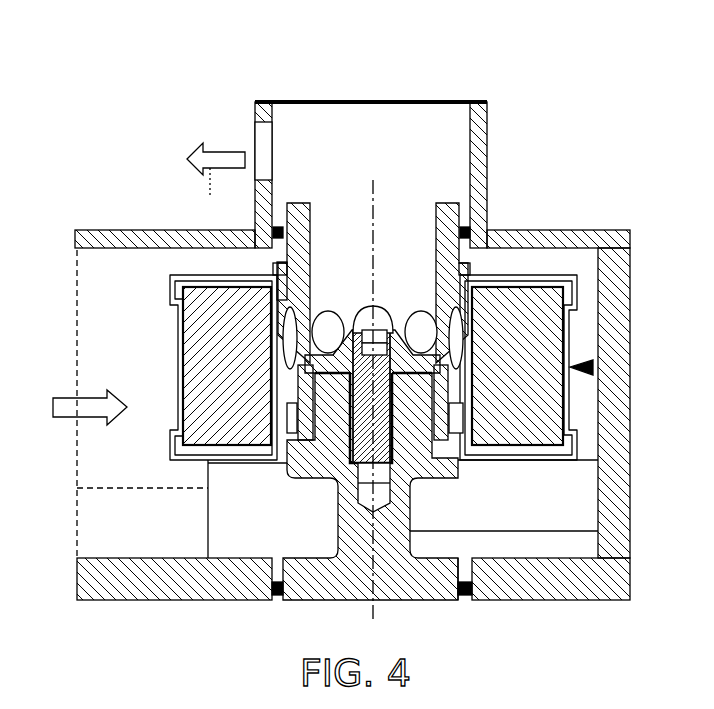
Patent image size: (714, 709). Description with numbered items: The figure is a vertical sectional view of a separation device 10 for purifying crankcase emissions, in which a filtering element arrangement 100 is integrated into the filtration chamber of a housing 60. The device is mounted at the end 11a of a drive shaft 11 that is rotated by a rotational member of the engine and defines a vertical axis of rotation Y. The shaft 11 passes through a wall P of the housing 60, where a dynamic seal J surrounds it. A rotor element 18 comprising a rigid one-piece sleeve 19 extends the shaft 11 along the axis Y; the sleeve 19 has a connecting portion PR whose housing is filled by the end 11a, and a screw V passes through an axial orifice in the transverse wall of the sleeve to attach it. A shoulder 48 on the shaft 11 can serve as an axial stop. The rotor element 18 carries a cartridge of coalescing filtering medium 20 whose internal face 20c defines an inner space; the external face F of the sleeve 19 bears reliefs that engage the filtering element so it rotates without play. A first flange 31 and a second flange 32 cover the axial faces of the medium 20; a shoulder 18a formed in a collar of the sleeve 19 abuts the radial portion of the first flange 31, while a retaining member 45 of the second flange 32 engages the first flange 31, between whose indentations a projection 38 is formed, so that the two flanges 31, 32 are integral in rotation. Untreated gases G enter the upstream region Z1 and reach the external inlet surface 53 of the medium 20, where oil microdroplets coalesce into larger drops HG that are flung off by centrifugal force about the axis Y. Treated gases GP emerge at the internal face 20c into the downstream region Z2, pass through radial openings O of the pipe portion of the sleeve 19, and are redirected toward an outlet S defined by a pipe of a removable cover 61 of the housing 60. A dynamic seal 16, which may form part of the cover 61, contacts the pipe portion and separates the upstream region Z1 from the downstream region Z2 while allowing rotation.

The separation device 10 is at (73, 517).
The shaft 11 is at (598, 531).
The end of the shaft 11a is at (415, 400).
The dynamic seal 16 is at (472, 232).
The rotor element 18 is at (310, 240).
The shoulder 18a is at (283, 295).
The sleeve 19 is at (457, 263).
The filtering medium 20 is at (565, 400).
The internal face 20c is at (280, 325).
The first flange 31 is at (577, 290).
The second flange 32 is at (577, 450).
The projection 38 is at (290, 375).
The retaining member 45 is at (292, 380).
The shoulder 48 is at (460, 460).
The external inlet surface 53 is at (265, 352).
The housing 60 is at (628, 232).
The cover 61 is at (483, 200).
The filtering element arrangement 100 is at (193, 477).
The outlet S is at (255, 123).
The radial openings O is at (417, 327).
The downstream region Z2 is at (397, 247).
The upstream region Z1 is at (167, 462).
The treated gases GP is at (216, 185).
The untreated gases G is at (55, 403).
The external face F is at (447, 378).
The drops of oil HG is at (593, 368).
The connecting portion PR is at (307, 453).
The screw V is at (337, 483).
The wall P is at (173, 600).
The dynamic seal J is at (470, 590).
The axis of rotation Y is at (377, 612).